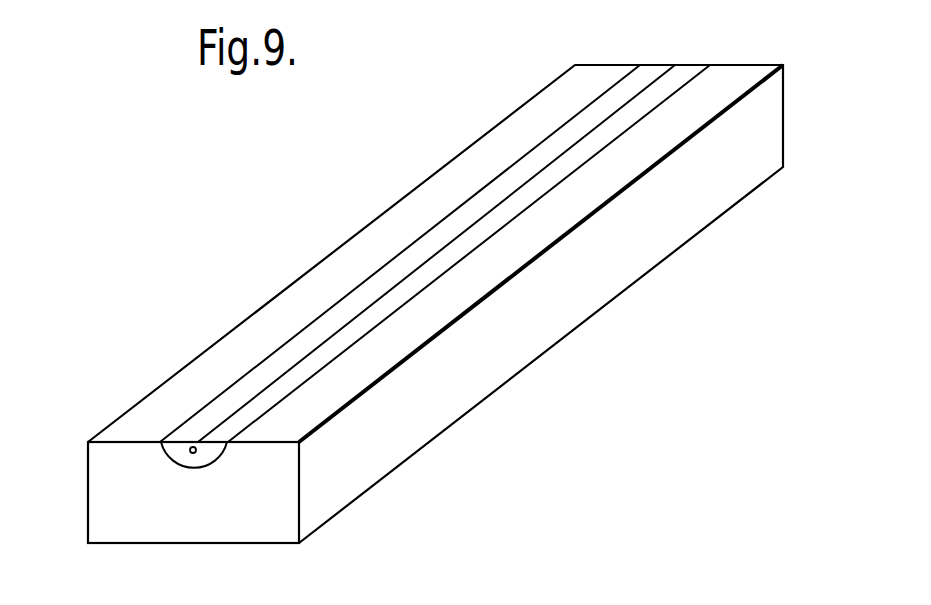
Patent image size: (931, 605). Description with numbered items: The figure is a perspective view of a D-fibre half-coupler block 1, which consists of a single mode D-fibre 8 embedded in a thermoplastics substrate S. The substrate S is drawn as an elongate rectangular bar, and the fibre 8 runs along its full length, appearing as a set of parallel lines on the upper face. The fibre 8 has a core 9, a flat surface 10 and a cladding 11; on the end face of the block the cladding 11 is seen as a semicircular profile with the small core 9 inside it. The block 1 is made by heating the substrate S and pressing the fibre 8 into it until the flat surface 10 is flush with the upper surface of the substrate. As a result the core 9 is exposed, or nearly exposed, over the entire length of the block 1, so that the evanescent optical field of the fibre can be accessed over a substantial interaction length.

The D-fibre half-coupler block 1 is at (645, 282).
The single mode D-fibre 8 is at (221, 384).
The core 9 is at (194, 453).
The flat surface 10 is at (320, 323).
The cladding 11 is at (170, 462).
The thermoplastics substrate S is at (773, 133).